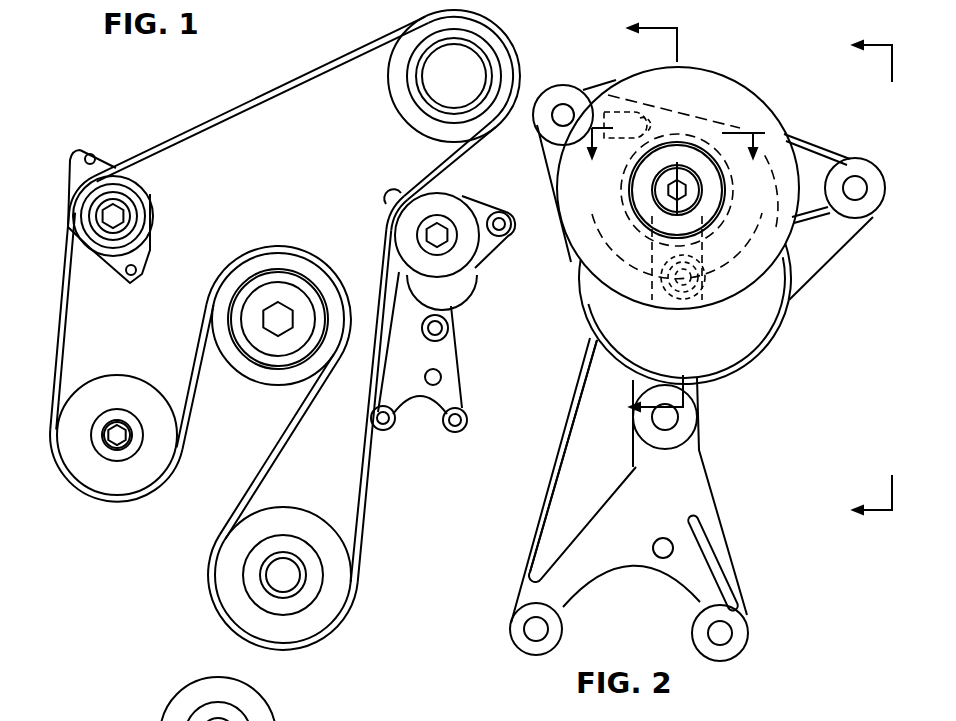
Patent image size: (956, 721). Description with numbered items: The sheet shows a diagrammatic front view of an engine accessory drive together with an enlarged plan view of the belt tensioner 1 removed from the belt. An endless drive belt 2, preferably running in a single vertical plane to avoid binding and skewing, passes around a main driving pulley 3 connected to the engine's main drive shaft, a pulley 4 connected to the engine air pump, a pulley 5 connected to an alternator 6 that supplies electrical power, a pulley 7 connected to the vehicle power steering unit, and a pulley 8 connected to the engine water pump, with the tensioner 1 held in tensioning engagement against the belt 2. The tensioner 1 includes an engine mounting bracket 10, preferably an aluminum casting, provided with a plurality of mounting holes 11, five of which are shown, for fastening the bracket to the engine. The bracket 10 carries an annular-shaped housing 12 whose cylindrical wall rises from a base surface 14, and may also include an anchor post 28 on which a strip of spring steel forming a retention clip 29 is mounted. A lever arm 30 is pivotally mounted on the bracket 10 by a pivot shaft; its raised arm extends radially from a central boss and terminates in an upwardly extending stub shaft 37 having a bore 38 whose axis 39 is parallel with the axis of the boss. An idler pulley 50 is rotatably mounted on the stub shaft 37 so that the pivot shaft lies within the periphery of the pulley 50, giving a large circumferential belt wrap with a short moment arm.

In FIG. 1, the belt tensioner 1 is at (480, 322).
In FIG. 2, the belt tensioner 1 is at (786, 55).
In FIG. 1, the endless drive belt 2 is at (285, 86).
In FIG. 1, the main driving pulley 3 is at (232, 568).
In FIG. 2, the main driving pulley 3 is at (861, 277).
In FIG. 1, the pulley 4 is at (418, 40).
In FIG. 2, the pulley 4 is at (640, 220).
In FIG. 1, the pulley 5 is at (100, 167).
In FIG. 1, the alternator 6 is at (128, 204).
In FIG. 1, the pulley 7 is at (70, 440).
In FIG. 1, the pulley 8 is at (303, 255).
In FIG. 2, the pulley 8 is at (672, 153).
In FIG. 2, the engine mounting bracket 10 is at (716, 496).
In FIG. 2, the mounting holes 11 is at (563, 110).
In FIG. 2, the annular-shaped housing 12 is at (776, 348).
In FIG. 2, the base surface 14 is at (706, 292).
In FIG. 2, the anchor post 28 is at (618, 108).
In FIG. 2, the retention clip 29 is at (770, 190).
In FIG. 2, the lever arm 30 is at (584, 320).
In FIG. 2, the idler pulley 50 is at (700, 66).
In FIG. 1, the stub shaft 37 is at (305, 720).
In FIG. 1, the bore 38 is at (250, 718).
In FIG. 1, the axis 39 is at (175, 718).